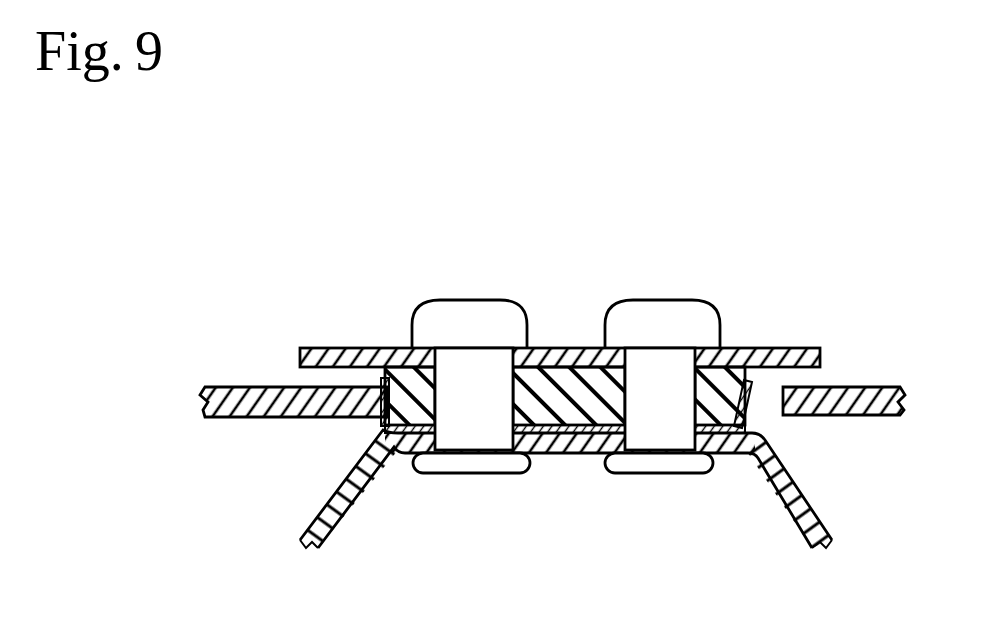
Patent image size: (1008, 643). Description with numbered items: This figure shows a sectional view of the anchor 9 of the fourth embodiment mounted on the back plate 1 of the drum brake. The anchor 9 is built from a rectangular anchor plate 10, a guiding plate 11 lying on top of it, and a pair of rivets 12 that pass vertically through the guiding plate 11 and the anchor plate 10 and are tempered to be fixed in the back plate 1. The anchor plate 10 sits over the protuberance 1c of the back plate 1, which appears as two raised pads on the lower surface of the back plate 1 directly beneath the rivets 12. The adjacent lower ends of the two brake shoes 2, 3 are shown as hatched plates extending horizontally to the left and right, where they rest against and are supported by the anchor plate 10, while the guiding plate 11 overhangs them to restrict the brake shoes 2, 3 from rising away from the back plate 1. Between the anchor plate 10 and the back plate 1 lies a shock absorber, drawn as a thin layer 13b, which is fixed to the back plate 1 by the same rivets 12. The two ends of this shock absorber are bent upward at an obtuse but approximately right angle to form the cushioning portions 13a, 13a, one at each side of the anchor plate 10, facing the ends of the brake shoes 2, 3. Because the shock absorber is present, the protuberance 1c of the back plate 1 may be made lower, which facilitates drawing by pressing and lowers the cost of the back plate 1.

The back plate 1 is at (830, 520).
The protuberance 1c is at (407, 456).
The brake shoe 2 is at (880, 382).
The brake shoe 3 is at (250, 383).
The anchor 9 is at (560, 312).
The anchor plate 10 is at (590, 400).
The guiding plate 11 is at (546, 347).
The rivet 12 is at (672, 232).
The cushioning portion 13a is at (345, 419).
The bottom layer of holder 13b is at (565, 435).